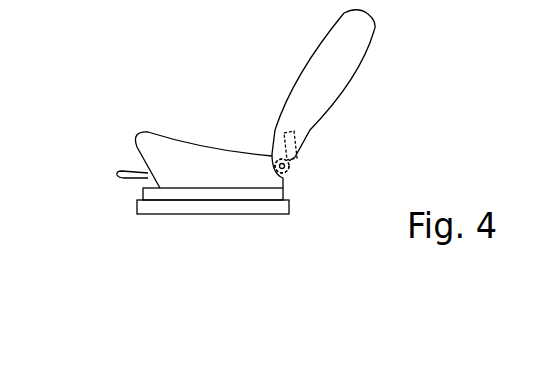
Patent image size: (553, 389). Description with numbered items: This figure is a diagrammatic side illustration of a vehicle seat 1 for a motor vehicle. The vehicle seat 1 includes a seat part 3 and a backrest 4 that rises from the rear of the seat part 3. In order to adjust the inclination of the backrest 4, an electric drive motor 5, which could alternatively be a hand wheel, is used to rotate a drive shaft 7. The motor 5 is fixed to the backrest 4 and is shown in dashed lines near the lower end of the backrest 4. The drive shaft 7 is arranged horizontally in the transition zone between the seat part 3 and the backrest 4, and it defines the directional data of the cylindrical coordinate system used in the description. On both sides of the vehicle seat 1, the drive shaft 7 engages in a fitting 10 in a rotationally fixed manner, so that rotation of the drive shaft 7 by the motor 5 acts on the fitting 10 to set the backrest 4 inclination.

The vehicle seat 1 is at (258, 127).
The seat part 3 is at (160, 146).
The backrest 4 is at (335, 58).
The electric drive motor 5 is at (291, 143).
The drive shaft 7 is at (284, 168).
The fitting 10 is at (305, 170).